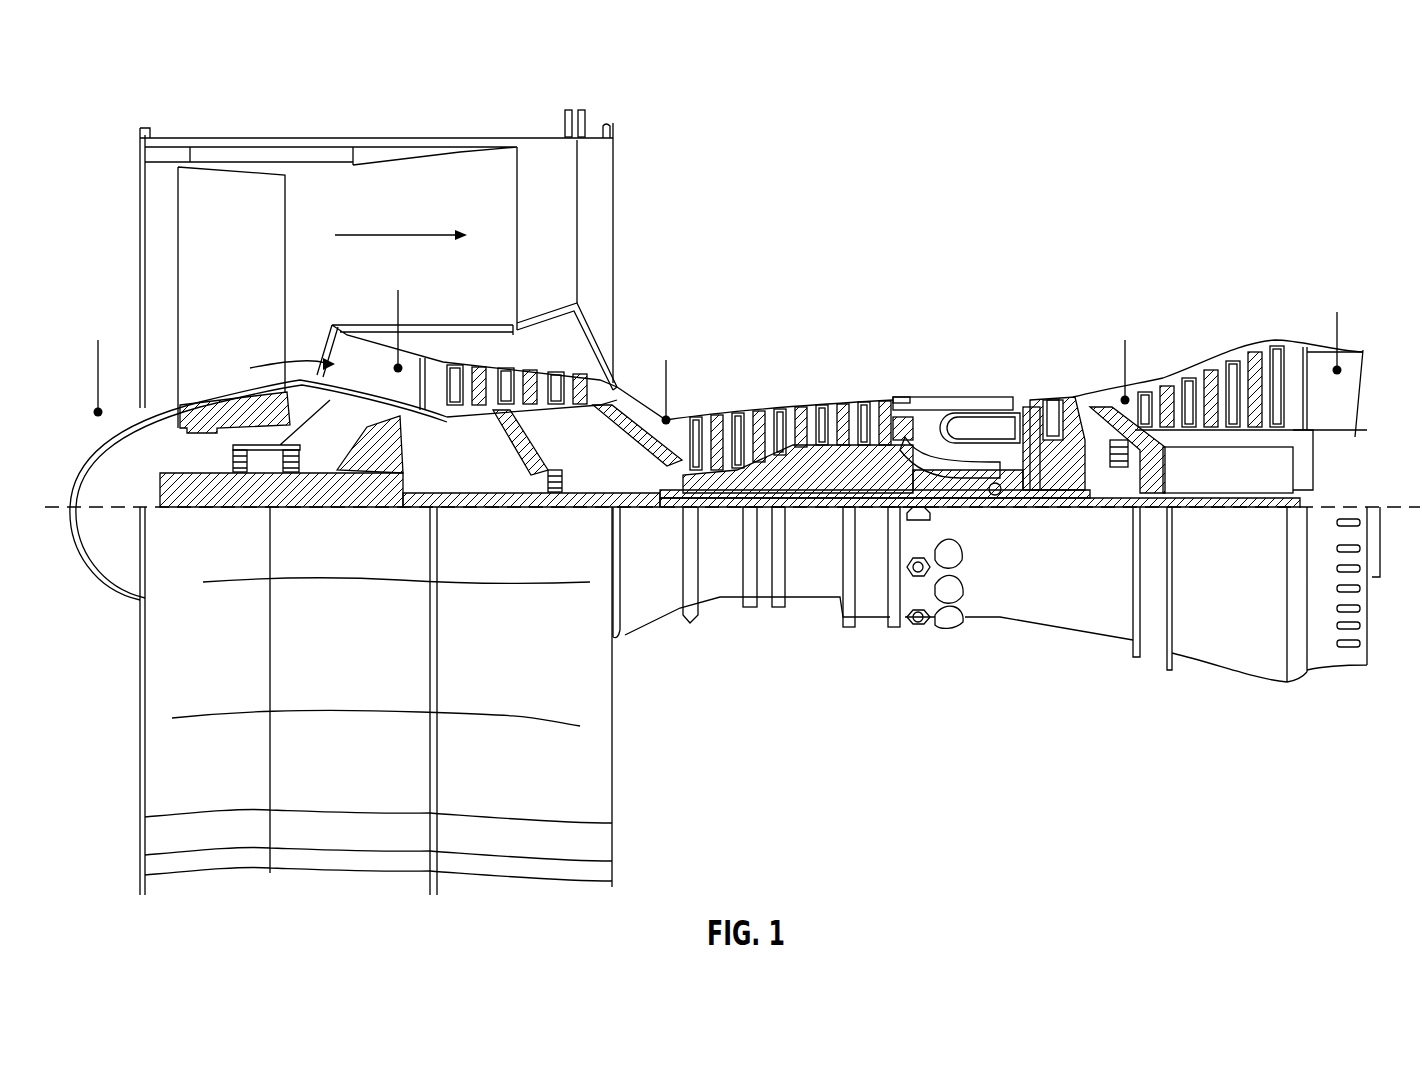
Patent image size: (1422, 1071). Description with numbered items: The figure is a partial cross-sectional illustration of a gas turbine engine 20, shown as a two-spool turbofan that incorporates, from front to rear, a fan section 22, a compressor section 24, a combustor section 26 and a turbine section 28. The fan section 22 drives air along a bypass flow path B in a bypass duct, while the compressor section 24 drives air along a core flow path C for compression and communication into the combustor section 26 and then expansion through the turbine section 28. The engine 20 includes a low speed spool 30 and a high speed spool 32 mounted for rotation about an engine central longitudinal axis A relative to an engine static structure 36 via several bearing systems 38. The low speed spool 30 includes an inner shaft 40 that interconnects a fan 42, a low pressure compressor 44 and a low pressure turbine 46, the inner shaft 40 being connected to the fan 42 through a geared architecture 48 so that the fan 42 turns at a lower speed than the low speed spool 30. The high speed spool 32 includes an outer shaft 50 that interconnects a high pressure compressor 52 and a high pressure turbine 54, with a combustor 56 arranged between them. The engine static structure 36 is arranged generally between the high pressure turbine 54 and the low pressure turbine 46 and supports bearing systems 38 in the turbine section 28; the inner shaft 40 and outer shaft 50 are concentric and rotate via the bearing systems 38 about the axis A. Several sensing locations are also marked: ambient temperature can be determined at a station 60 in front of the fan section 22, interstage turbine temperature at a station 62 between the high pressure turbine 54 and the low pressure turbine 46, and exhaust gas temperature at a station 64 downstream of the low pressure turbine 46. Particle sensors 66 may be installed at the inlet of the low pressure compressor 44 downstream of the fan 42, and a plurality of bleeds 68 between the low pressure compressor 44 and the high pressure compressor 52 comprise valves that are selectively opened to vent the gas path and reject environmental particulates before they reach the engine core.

The gas turbine engine 20 is at (1185, 175).
The fan section 22 is at (250, 129).
The compressor section 24 is at (803, 366).
The combustor section 26 is at (957, 361).
The turbine section 28 is at (1158, 303).
The low speed spool 30 is at (837, 510).
The high speed spool 32 is at (885, 455).
The engine static structure 36 is at (875, 625).
The bearing systems 38 is at (240, 477).
The inner shaft 40 is at (627, 500).
The fan 42 is at (258, 268).
The low pressure compressor 44 is at (527, 392).
The low pressure turbine 46 is at (1227, 362).
The geared architecture 48 is at (380, 470).
The outer shaft 50 is at (1010, 470).
The high pressure compressor 52 is at (795, 470).
The high pressure turbine 54 is at (1058, 405).
The combustor 56 is at (978, 425).
The station 60 is at (98, 373).
The station 62 is at (1127, 358).
The station 64 is at (1339, 328).
The particle sensors 66 is at (400, 306).
The bleeds 68 is at (668, 378).
The engine central longitudinal axis A is at (1388, 500).
The bypass flow path B is at (405, 235).
The core flow path C is at (262, 358).